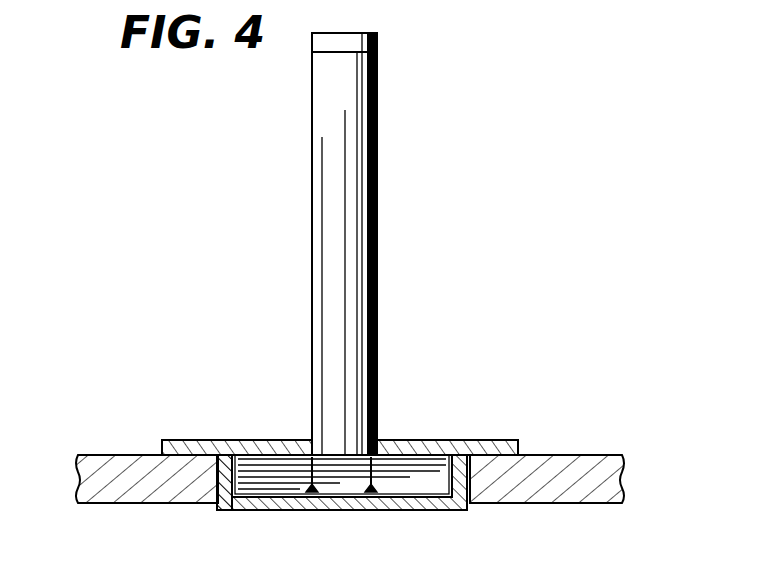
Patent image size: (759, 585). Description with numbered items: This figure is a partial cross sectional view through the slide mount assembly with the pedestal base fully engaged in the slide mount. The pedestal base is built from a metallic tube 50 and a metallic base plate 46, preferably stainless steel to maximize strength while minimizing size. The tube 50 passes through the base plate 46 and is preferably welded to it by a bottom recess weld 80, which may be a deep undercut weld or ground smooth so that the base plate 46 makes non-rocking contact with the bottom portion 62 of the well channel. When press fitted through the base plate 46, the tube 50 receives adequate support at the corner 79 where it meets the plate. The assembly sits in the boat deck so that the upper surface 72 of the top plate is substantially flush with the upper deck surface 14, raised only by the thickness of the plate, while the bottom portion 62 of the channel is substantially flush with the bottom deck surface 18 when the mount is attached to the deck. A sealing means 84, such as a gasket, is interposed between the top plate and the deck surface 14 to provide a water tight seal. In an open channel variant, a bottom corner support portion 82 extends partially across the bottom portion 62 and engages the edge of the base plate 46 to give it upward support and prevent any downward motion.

The upper deck surface 14 is at (563, 455).
The bottom deck surface 18 is at (556, 503).
The base plate 46 is at (274, 491).
The tube 50 is at (377, 193).
The bottom portion 62 is at (455, 510).
The upper surface 72 is at (510, 440).
The corner 79 is at (373, 438).
The bottom recess weld 80 is at (370, 500).
The bottom corner support portion 82 is at (228, 498).
The sealing means 84 is at (162, 453).